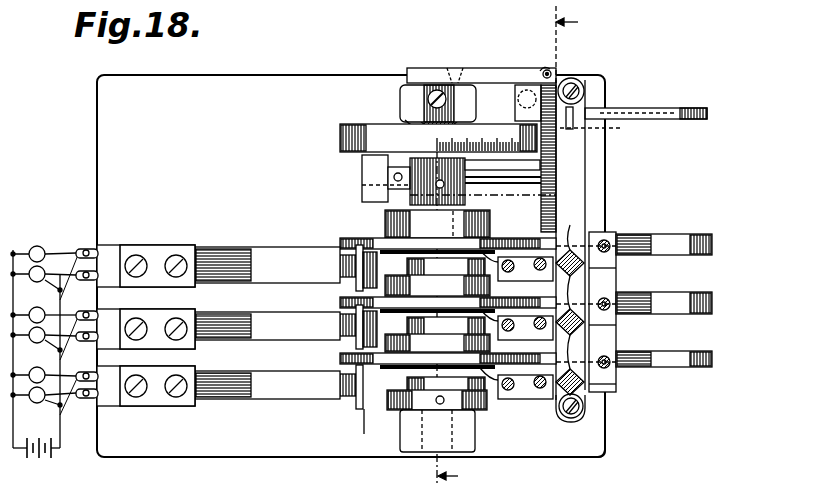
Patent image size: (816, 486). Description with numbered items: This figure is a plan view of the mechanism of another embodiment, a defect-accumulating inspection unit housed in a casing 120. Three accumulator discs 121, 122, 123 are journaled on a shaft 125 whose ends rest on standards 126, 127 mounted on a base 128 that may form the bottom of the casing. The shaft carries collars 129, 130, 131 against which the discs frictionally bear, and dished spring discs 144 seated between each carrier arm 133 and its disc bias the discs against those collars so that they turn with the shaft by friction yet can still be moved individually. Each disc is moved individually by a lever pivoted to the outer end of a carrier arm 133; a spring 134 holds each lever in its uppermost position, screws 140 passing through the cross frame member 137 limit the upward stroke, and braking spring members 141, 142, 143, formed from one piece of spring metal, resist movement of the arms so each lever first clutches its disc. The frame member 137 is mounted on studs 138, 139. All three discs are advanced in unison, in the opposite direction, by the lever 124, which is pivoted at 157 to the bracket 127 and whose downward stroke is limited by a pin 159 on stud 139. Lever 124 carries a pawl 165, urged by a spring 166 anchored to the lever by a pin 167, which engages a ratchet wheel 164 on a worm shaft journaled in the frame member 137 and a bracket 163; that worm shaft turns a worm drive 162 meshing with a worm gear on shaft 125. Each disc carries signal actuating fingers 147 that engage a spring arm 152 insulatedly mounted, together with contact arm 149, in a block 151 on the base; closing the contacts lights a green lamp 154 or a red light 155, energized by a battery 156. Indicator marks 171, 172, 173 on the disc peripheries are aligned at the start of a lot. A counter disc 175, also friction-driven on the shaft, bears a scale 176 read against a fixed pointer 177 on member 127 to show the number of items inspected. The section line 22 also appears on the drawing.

The section line 22 is at (512, 245).
The casing 120 is at (612, 430).
The accumulator disc 121 is at (345, 360).
The accumulator disc 122 is at (345, 303).
The accumulator disc 123 is at (342, 243).
The lever 124 is at (541, 84).
The shaft 125 is at (470, 440).
The standard 126 is at (412, 455).
The standard 127 is at (405, 95).
The base 128 is at (255, 75).
The collar 129 is at (366, 349).
The collar 130 is at (366, 290).
The collar 131 is at (385, 215).
The carrier arm 133 is at (407, 268).
The spring 134 is at (612, 232).
The cross frame member 137 is at (582, 193).
The stud 138 is at (584, 408).
The stud 139 is at (584, 93).
The screw 140 is at (638, 399).
The spring member 141 is at (617, 384).
The spring member 142 is at (617, 325).
The spring member 143 is at (617, 268).
The spring disc 144 is at (512, 272).
The signal actuating finger 147 is at (352, 262).
The contact arm 149 is at (325, 275).
The block 151 is at (200, 310).
The spring arm 152 is at (340, 262).
The green lamp 154 is at (42, 283).
The red light 155 is at (40, 246).
The battery 156 is at (45, 460).
The pivot 157 is at (452, 72).
The pin 159 is at (618, 129).
The worm drive 162 is at (466, 182).
The bracket 163 is at (362, 165).
The ratchet wheel 164 is at (557, 165).
The pawl 165 is at (574, 125).
The spring 166 is at (550, 76).
The pin 167 is at (548, 66).
The indicator mark 171 is at (455, 352).
The indicator mark 172 is at (455, 296).
The indicator mark 173 is at (452, 246).
The counter disc 175 is at (345, 140).
The scale 176 is at (486, 128).
The fixed pointer 177 is at (408, 121).